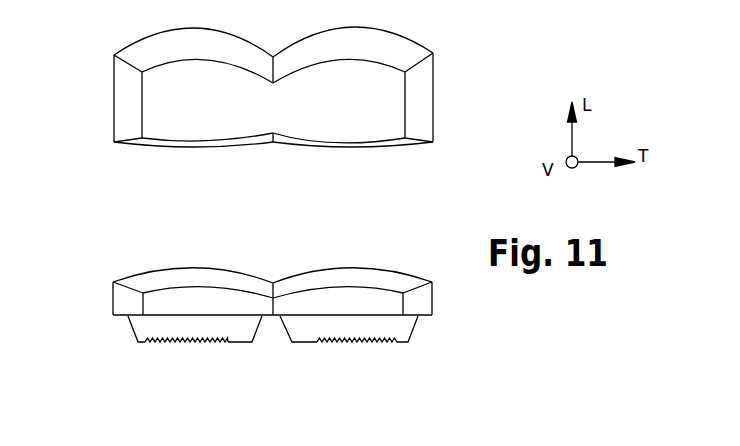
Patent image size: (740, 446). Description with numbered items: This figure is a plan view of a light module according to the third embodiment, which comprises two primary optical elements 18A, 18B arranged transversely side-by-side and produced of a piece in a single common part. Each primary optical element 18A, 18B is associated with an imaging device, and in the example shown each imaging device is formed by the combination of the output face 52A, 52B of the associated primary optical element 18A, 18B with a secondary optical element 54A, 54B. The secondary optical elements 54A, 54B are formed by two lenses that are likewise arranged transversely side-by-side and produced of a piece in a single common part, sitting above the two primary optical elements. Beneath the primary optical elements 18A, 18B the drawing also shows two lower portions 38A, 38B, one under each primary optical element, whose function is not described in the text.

The primary optical element 18A is at (158, 277).
The primary optical element 18B is at (383, 275).
The output face 52A is at (193, 270).
The output face 52B is at (360, 278).
The secondary optical element 54A is at (200, 105).
The secondary optical element 54B is at (360, 97).
The first fastening base 38A is at (153, 328).
The second fastening base 38B is at (397, 325).